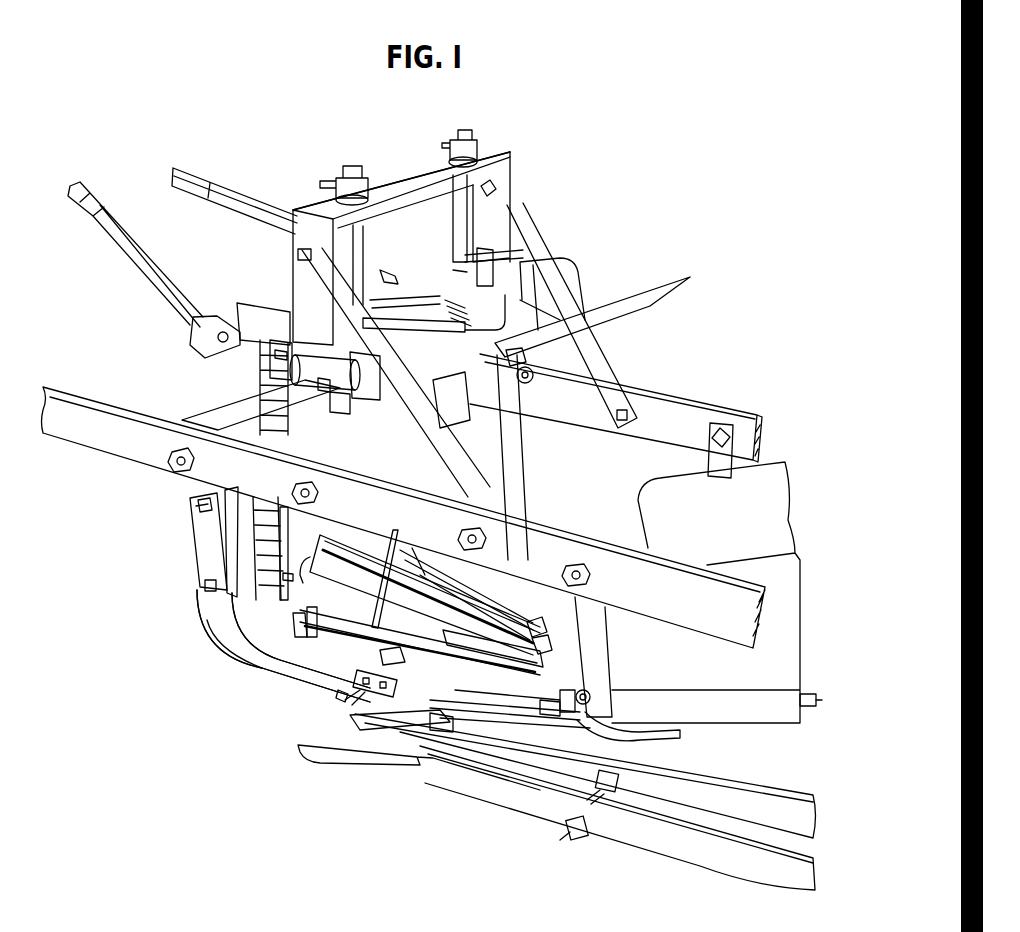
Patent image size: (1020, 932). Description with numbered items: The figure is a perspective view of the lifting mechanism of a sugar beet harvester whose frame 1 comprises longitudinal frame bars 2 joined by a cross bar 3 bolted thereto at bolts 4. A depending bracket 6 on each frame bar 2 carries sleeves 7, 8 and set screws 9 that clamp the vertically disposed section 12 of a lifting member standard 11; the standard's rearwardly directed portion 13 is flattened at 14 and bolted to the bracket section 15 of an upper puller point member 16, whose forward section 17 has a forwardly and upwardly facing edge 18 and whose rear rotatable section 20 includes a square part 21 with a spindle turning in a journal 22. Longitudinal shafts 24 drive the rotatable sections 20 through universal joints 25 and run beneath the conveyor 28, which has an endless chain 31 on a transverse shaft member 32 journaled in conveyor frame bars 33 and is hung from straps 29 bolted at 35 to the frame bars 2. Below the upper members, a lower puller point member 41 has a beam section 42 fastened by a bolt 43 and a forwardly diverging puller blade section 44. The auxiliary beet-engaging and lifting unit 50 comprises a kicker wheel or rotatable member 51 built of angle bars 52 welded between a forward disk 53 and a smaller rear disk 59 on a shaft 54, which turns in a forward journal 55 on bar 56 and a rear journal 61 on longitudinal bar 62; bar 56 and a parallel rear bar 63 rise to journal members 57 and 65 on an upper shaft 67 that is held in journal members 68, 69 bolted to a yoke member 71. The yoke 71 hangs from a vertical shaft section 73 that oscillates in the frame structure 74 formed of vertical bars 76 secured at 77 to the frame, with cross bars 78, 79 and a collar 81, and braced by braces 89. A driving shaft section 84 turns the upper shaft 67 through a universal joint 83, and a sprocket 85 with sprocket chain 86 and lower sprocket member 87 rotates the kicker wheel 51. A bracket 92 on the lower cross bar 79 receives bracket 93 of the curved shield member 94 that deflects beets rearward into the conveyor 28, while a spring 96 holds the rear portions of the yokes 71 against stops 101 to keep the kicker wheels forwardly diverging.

The frame 1 is at (679, 388).
The frame bars 2 is at (612, 553).
The cross bars 3 is at (205, 410).
The bolts 4 is at (170, 458).
The depending bracket 6 is at (196, 545).
The sleeve 7 is at (198, 492).
The sleeve 8 is at (230, 564).
The set screws 9 is at (198, 508).
The lifting member standard 11 is at (236, 659).
The vertically disposed section 12 is at (223, 605).
The rearwardly directed portion 13 is at (268, 668).
The flattened part 14 is at (360, 702).
The bracket section 15 is at (350, 700).
The upper puller point member 16 is at (373, 660).
The forward section 17 is at (362, 728).
The forwardly and upwardly facing edge 18 is at (338, 694).
The rear rotatable section 20 is at (494, 718).
The polygonal part 21 is at (514, 722).
The journal 22 is at (444, 732).
The shafts 24 is at (802, 710).
The universal joint 25 is at (560, 720).
The conveyor 28 is at (760, 730).
The straps 29 is at (718, 466).
The endless chain 31 is at (668, 750).
The transverse shaft member 32 is at (592, 689).
The conveyor frame bars 33 is at (704, 696).
The bolt 35 is at (566, 568).
The lower puller point member 41 is at (442, 794).
The beam section 42 is at (614, 832).
The bolt 43 is at (592, 798).
The puller blade section 44 is at (374, 758).
The auxiliary beet-engaging and lifting unit 50 is at (277, 612).
The rotatable member 51 is at (349, 526).
The bars 52 is at (414, 548).
The disk 53 is at (300, 636).
The shaft 54 is at (418, 640).
The journal 55 is at (290, 570).
The bar 56 is at (256, 524).
The journal member 57 is at (288, 318).
The rear disk member 59 is at (538, 619).
The journal 61 is at (540, 641).
The longitudinal bar 62 is at (455, 648).
The bar 63 is at (514, 450).
The journal member 65 is at (398, 400).
The upper shaft 67 is at (332, 416).
The journal member 68 is at (318, 394).
The journal member 69 is at (452, 428).
The yoke member 71 is at (398, 292).
The vertical shaft section 73 is at (356, 236).
The vertically extending frame structure 74 is at (400, 184).
The vertical bars 76 is at (296, 268).
The securing means 77 is at (294, 490).
The cross bar 78 is at (422, 168).
The cross bar 79 is at (448, 262).
The collar 81 is at (338, 182).
The universal joint 83 is at (198, 356).
The driving shaft section 84 is at (244, 190).
The sprocket 85 is at (274, 344).
The sprocket chain 86 is at (262, 408).
The lower sprocket member 87 is at (228, 623).
The braces 89 is at (560, 280).
The bracket 92 is at (470, 262).
The bracket 93 is at (548, 302).
The curved shield member 94 is at (636, 288).
The spring 96 is at (430, 310).
The stops 101 is at (535, 285).